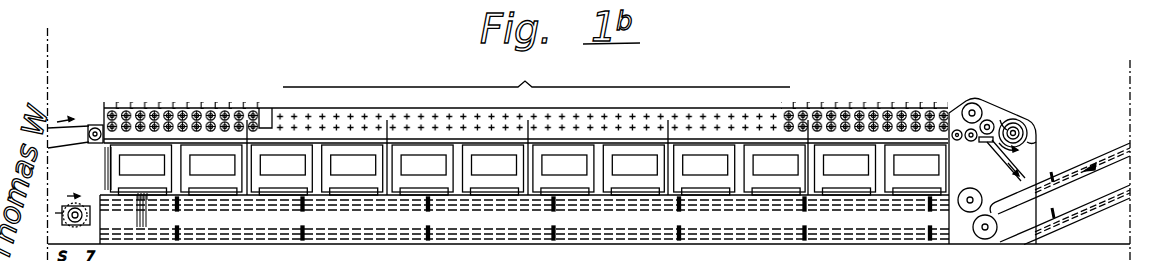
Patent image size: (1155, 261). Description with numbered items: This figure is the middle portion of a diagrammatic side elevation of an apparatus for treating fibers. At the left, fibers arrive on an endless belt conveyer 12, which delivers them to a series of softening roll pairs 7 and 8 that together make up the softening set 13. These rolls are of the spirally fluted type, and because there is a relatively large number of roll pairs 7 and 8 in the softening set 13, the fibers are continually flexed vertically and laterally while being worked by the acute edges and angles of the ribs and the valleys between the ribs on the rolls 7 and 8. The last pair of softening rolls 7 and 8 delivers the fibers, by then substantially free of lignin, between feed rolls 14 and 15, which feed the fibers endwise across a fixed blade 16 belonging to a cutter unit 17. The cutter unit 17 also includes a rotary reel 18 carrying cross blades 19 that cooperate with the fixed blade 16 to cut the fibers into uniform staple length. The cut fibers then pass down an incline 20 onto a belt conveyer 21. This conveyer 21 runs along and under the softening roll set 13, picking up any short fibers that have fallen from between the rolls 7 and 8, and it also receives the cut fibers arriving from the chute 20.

The softening roll 7 is at (112, 106).
The softening roll 8 is at (102, 139).
The endless belt conveyer 12 is at (92, 122).
The softening set 13 is at (536, 77).
The feed roll 14 is at (992, 122).
The feed roll 15 is at (971, 142).
The fixed blade 16 is at (993, 133).
The cutter unit 17 is at (968, 102).
The rotary reel 18 is at (1029, 127).
The cross blades 19 is at (1000, 123).
The incline 20 is at (1006, 171).
The belt conveyer 21 is at (92, 197).